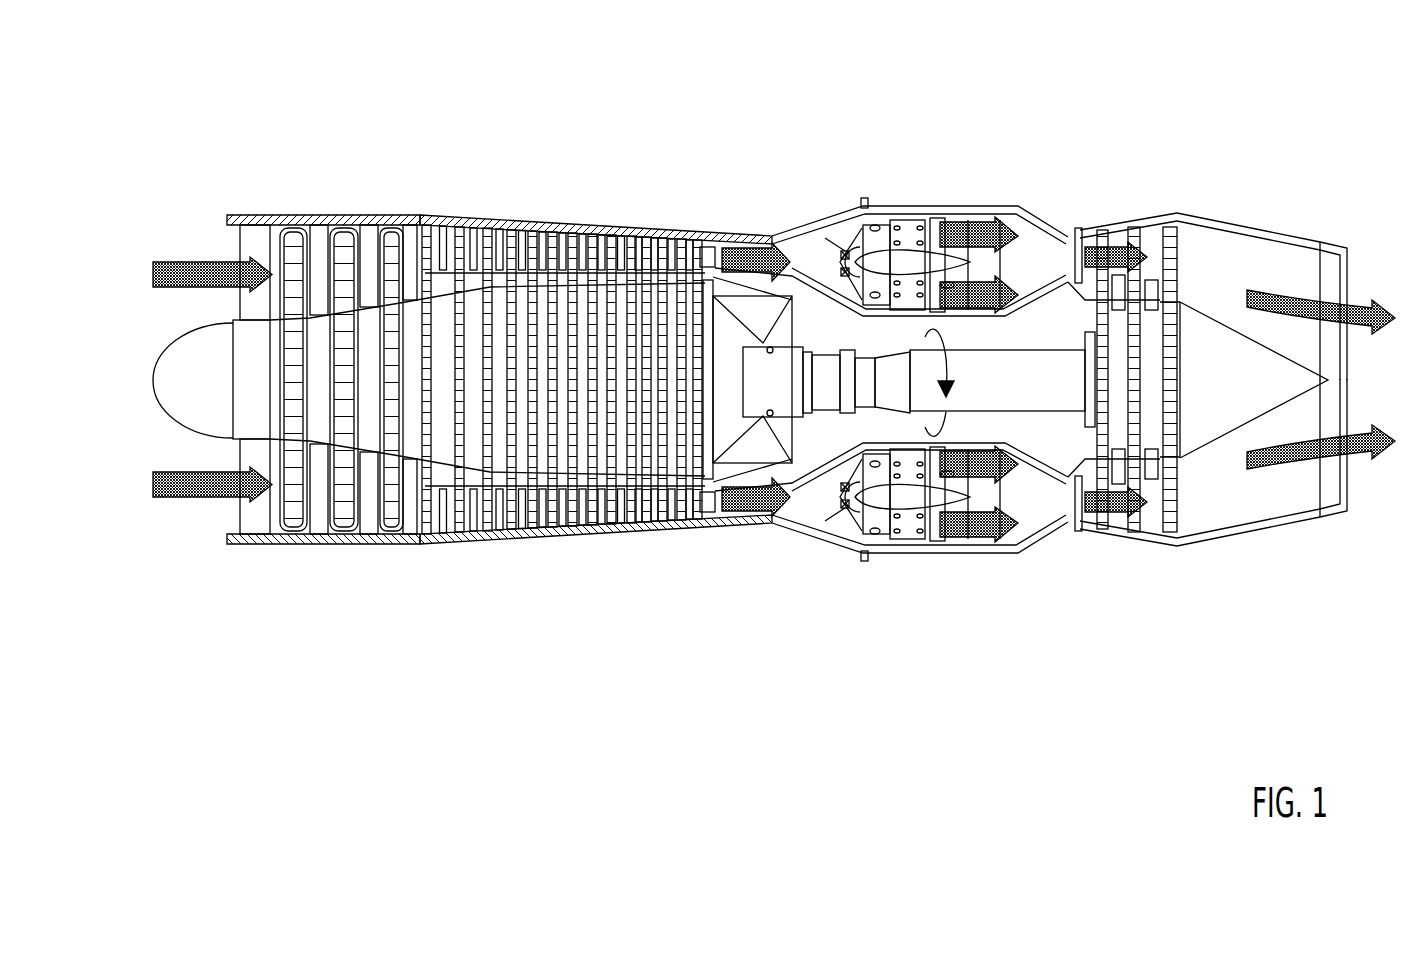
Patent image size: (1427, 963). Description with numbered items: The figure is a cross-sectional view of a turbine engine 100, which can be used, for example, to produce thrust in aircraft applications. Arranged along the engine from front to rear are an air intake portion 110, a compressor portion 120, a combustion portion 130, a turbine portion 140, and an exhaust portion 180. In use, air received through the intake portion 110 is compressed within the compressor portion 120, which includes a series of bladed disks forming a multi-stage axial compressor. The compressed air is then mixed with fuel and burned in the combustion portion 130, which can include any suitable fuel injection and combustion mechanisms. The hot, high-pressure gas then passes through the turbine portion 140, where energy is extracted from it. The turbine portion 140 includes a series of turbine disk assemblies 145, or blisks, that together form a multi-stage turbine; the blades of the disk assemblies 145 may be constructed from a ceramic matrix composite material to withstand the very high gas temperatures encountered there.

The turbine engine 100 is at (784, 342).
The air intake portion 110 is at (232, 513).
The compressor portion 120 is at (498, 313).
The combustion portion 130 is at (817, 503).
The turbine portion 140 is at (1117, 420).
The turbine disk assemblies 145 is at (1170, 475).
The exhaust portion 180 is at (1362, 465).